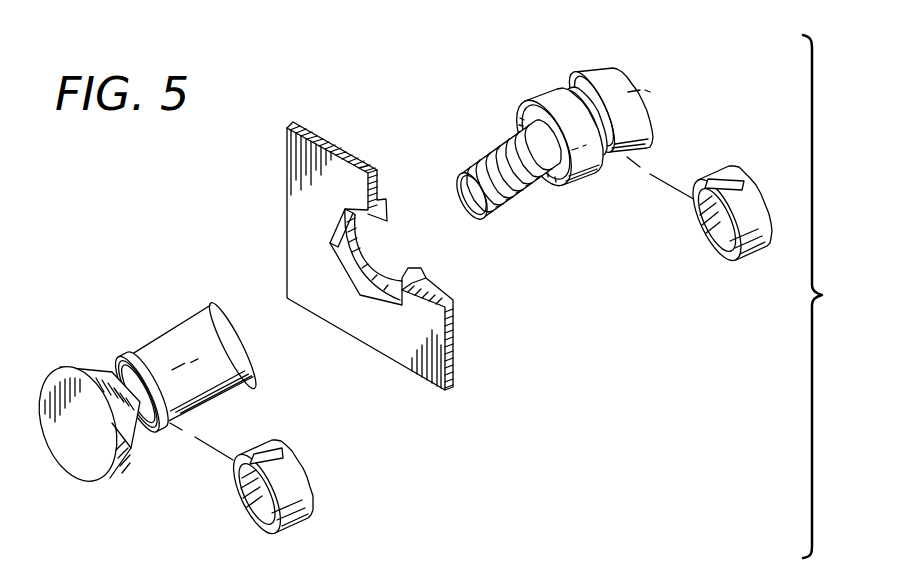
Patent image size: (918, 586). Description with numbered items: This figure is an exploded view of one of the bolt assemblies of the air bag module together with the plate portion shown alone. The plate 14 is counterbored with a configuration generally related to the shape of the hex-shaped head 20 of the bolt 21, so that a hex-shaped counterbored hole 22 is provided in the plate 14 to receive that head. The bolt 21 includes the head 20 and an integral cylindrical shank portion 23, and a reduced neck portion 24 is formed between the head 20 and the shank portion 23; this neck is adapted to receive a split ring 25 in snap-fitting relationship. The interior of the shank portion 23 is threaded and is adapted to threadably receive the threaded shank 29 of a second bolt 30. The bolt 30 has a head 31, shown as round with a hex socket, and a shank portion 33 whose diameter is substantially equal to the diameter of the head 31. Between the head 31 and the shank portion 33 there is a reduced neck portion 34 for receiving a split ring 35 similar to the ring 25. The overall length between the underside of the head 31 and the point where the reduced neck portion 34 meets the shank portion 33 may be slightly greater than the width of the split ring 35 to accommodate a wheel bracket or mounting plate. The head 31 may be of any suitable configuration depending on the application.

The plate 14 is at (401, 269).
The hex-shaped head 20 is at (118, 478).
The bolt 21 is at (163, 386).
The hex-shaped counterbored hole 22 is at (375, 293).
The cylindrical shank portion 23 is at (236, 392).
The reduced neck portion 24 is at (118, 372).
The split ring 25 is at (312, 478).
The threaded shank 29 is at (520, 196).
The bolt 30 is at (574, 186).
The head 31 is at (602, 72).
The shank portion 33 is at (583, 185).
The reduced neck portion 34 is at (568, 98).
The split ring 35 is at (705, 238).